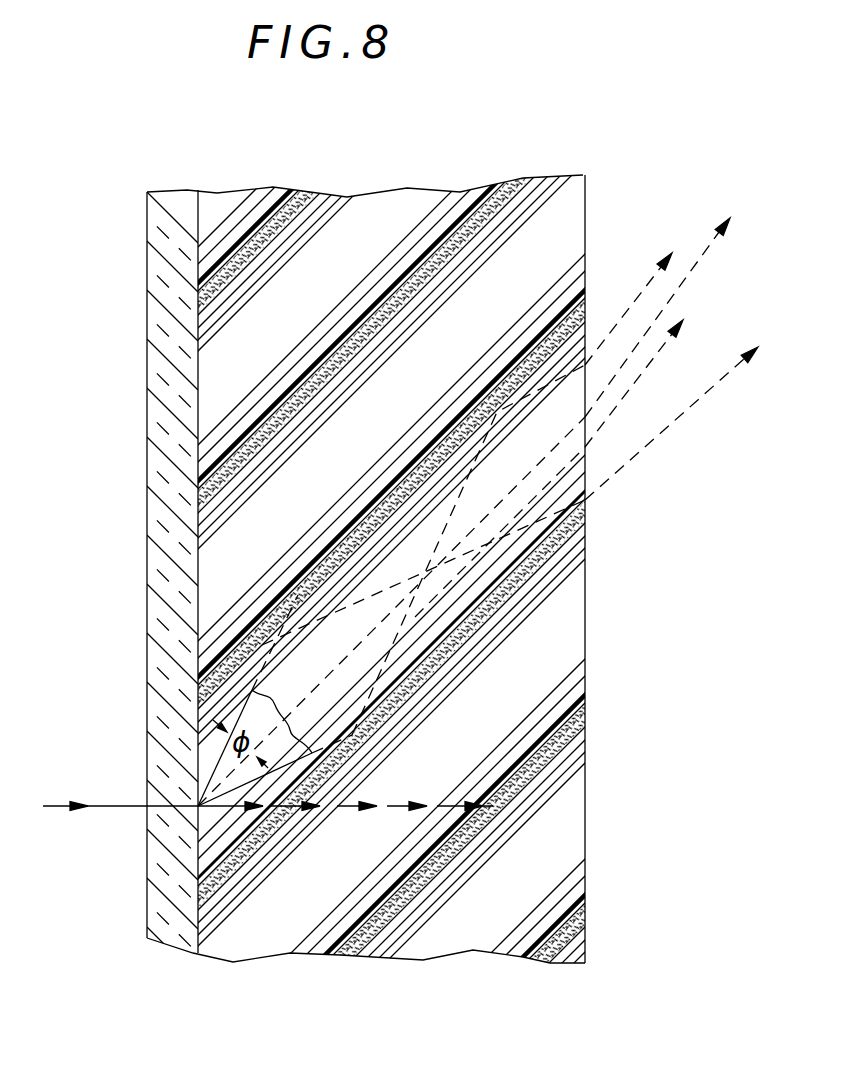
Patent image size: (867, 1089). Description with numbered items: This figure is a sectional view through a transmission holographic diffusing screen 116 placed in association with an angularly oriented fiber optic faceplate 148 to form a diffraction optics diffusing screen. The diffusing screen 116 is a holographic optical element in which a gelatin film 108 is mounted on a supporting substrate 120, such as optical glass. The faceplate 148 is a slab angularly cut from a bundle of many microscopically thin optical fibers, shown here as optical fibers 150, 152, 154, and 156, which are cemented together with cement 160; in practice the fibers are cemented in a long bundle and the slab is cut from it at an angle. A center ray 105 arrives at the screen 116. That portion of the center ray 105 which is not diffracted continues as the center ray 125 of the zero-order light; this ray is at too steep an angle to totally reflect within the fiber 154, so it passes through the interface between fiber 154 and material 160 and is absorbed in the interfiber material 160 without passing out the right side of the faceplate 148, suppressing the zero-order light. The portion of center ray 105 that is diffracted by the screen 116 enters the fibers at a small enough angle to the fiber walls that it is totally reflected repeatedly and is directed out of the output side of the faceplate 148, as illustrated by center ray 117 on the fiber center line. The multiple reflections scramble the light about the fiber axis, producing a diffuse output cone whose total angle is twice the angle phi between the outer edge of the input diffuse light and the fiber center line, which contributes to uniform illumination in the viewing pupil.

The center ray 105 is at (112, 806).
The gelatin film 108 is at (194, 303).
The diffusing screen 116 is at (147, 262).
The center ray 117 is at (686, 282).
The supporting substrate 120 is at (147, 368).
The center ray of the zero-order light 125 is at (345, 808).
The fiber optic faceplate 148 is at (352, 176).
The optical fiber 150 is at (418, 199).
The optical fiber 152 is at (585, 268).
The optical fiber 154 is at (585, 490).
The optical fiber 156 is at (585, 692).
The cement 160 is at (573, 730).